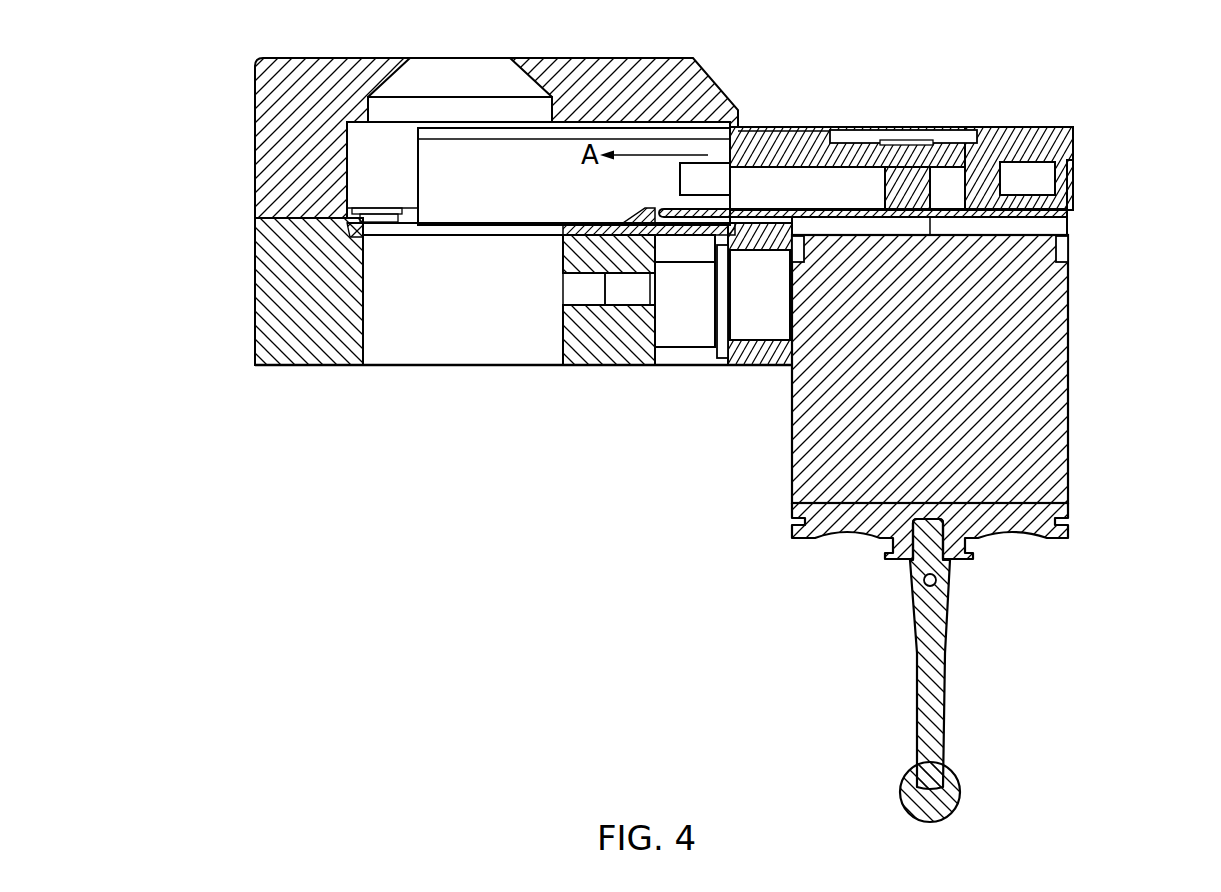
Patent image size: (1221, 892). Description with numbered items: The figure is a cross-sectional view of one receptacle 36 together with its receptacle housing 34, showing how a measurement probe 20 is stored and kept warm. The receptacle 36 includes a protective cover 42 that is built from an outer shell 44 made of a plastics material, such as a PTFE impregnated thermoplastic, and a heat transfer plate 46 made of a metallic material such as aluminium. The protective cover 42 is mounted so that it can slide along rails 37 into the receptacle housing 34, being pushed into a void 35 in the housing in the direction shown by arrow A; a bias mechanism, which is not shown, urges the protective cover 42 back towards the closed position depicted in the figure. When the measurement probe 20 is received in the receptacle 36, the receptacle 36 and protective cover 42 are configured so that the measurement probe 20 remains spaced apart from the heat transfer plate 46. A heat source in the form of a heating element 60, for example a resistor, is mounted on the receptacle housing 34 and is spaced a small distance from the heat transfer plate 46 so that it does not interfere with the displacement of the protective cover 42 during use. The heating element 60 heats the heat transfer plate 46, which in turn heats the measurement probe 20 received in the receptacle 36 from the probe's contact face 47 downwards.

The measurement probe 20 is at (1112, 243).
The receptacle housing 34 is at (273, 112).
The void 35 is at (522, 196).
The receptacle 36 is at (1161, 171).
The rails 37 is at (535, 133).
The protective cover 42 is at (903, 98).
The outer shell 44 is at (1000, 143).
The heat transfer plate 46 is at (673, 210).
The contact face 47 is at (1068, 248).
The heating element 60 is at (728, 205).